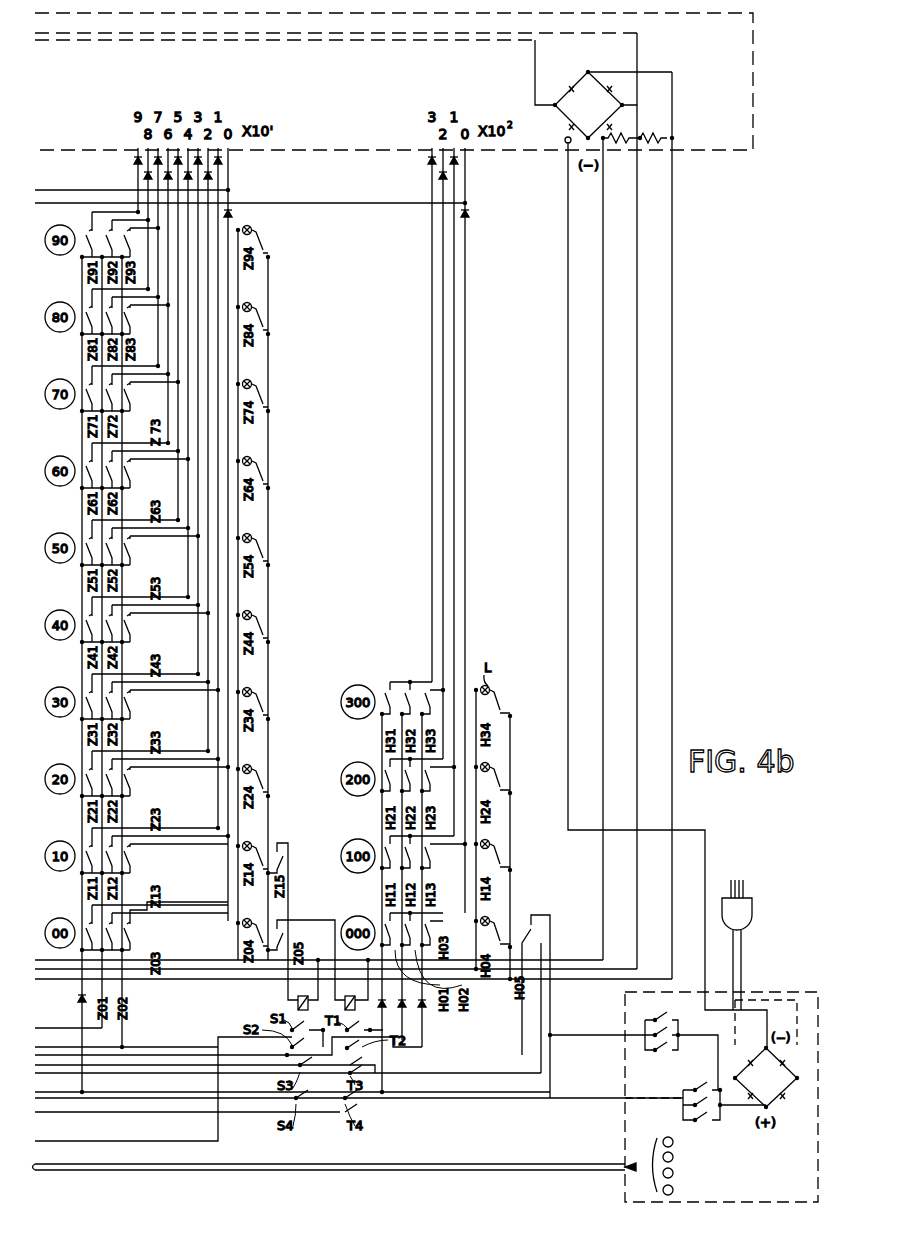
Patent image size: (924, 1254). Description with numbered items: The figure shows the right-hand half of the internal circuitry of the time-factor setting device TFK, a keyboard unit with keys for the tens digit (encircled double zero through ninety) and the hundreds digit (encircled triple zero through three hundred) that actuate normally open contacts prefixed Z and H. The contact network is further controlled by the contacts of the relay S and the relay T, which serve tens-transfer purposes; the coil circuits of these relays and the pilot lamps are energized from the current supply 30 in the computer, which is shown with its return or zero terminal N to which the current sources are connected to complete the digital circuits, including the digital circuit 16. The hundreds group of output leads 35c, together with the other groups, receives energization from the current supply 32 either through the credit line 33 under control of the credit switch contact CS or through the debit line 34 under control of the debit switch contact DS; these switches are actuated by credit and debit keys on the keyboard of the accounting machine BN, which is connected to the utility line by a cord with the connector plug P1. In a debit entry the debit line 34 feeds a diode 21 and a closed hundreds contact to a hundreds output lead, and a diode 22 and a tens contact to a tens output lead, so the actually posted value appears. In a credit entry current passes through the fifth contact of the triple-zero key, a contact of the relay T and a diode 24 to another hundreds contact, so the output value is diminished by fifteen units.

The digital circuit 16 is at (528, 1166).
The diode 21 is at (357, 1010).
The diode 22 is at (68, 1001).
The diode 24 is at (413, 1020).
The current supply 30 is at (584, 86).
The current supply 32 is at (776, 1086).
The credit line 33 is at (596, 1050).
The debit line 34 is at (596, 1108).
The group of output leads 35c is at (433, 186).
The connector plug P1 is at (752, 912).
The accounting machine BN is at (784, 992).
The credit switch contact CS is at (679, 1051).
The debit switch contact DS is at (690, 1092).
The return or zero terminal N is at (660, 590).
The relay S is at (303, 985).
The relay T is at (351, 985).
The time-factor setting device TFK is at (352, 496).